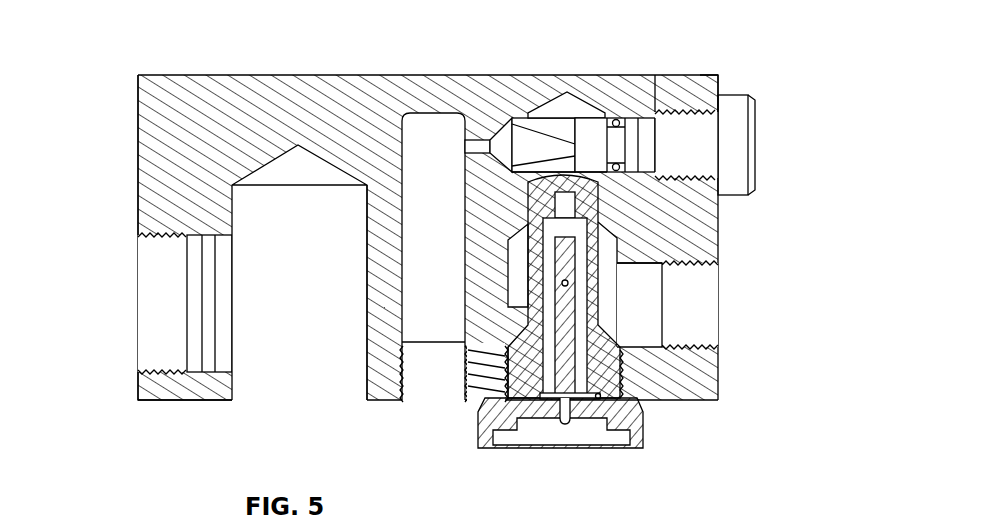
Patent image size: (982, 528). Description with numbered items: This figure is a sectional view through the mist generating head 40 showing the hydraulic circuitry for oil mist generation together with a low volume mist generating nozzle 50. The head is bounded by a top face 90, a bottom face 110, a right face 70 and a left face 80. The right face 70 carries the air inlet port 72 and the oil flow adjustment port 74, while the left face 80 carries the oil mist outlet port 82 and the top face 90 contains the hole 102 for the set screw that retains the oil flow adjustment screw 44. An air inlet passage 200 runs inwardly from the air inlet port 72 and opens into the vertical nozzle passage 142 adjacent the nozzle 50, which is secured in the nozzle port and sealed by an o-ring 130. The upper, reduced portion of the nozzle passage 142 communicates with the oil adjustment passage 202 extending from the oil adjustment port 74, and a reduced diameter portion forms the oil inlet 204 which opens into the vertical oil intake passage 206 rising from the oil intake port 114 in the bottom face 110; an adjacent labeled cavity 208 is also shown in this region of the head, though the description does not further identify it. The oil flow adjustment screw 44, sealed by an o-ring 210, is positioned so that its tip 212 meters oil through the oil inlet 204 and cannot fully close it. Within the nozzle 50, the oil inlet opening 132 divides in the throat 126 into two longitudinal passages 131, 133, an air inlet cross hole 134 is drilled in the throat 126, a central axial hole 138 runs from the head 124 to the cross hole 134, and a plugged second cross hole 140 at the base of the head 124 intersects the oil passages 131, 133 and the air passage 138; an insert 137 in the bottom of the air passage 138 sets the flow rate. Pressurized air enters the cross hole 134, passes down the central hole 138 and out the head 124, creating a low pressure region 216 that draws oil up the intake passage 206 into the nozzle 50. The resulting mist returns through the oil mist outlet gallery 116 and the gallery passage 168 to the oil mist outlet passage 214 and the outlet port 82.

The mist generating head 40 is at (717, 62).
The oil flow adjustment screw 44 is at (737, 155).
The mist generating nozzle 50 is at (650, 420).
The right face 70 is at (722, 212).
The air inlet port 72 is at (705, 290).
The oil flow adjustment port 74 is at (722, 92).
The left face 80 is at (138, 162).
The oil mist outlet port 82 is at (158, 262).
The top face 90 is at (345, 75).
The hole 102 is at (663, 95).
The bottom face 110 is at (180, 400).
The oil intake port 114 is at (425, 388).
The oil mist outlet gallery 116 is at (247, 400).
The head 124 is at (647, 440).
The throat 126 is at (518, 303).
The o-ring 130 is at (602, 205).
The longitudinal passage 131 is at (465, 211).
The oil inlet opening 132 is at (535, 192).
The longitudinal passage 133 is at (590, 258).
The air inlet cross hole 134 is at (540, 246).
The insert 137 is at (620, 372).
The central axial hole 138 is at (562, 425).
The second cross hole 140 is at (540, 399).
The nozzle passage 142 is at (520, 276).
The oil mist gallery passage 168 is at (362, 355).
The air inlet passage 200 is at (640, 345).
The oil adjustment passage 202 is at (650, 112).
The oil inlet 204 is at (485, 138).
The oil intake passage 206 is at (418, 112).
The passage 208 is at (506, 114).
The o-ring 210 is at (616, 119).
The tip 212 is at (557, 160).
The oil mist outlet passage 214 is at (195, 358).
The low pressure region 216 is at (565, 430).